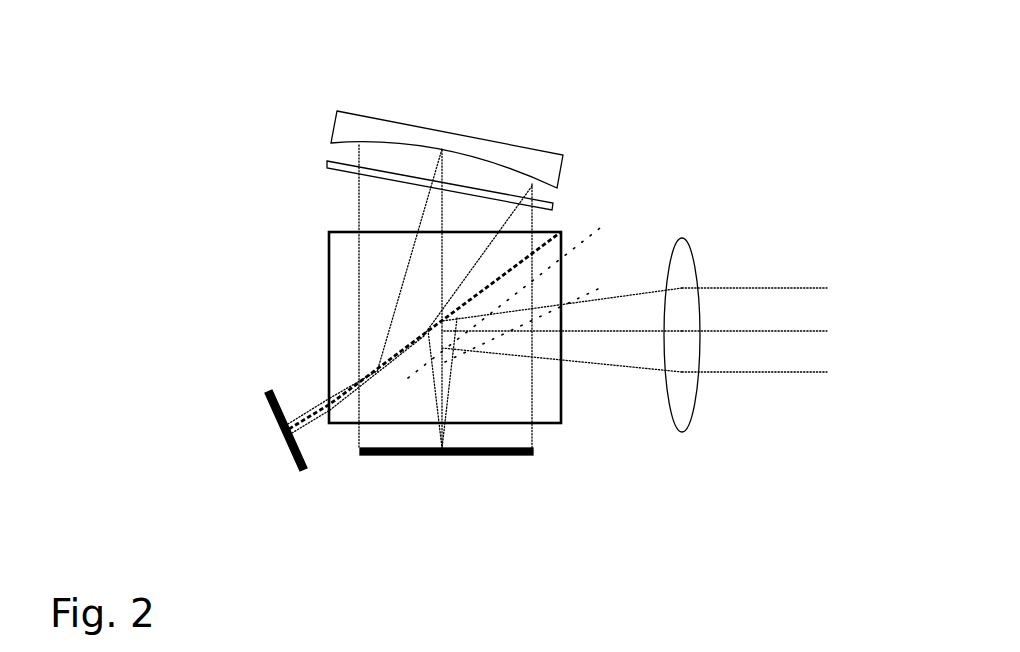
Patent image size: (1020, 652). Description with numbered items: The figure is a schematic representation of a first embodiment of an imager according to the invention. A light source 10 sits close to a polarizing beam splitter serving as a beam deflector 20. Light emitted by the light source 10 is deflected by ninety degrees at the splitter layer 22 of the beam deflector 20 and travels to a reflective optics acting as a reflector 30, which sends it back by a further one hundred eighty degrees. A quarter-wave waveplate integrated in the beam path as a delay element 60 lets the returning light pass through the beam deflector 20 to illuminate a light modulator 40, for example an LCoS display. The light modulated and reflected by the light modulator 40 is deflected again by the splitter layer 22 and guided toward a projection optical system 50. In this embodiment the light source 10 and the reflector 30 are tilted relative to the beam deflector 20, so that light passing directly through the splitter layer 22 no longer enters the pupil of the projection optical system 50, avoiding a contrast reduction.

The light source 10 is at (268, 399).
The beam deflector 20 is at (343, 255).
The splitter layer 22 is at (377, 368).
The reflector 30 is at (338, 137).
The light modulator 40 is at (503, 455).
The projection optical system 50 is at (682, 247).
The delay element 60 is at (553, 205).